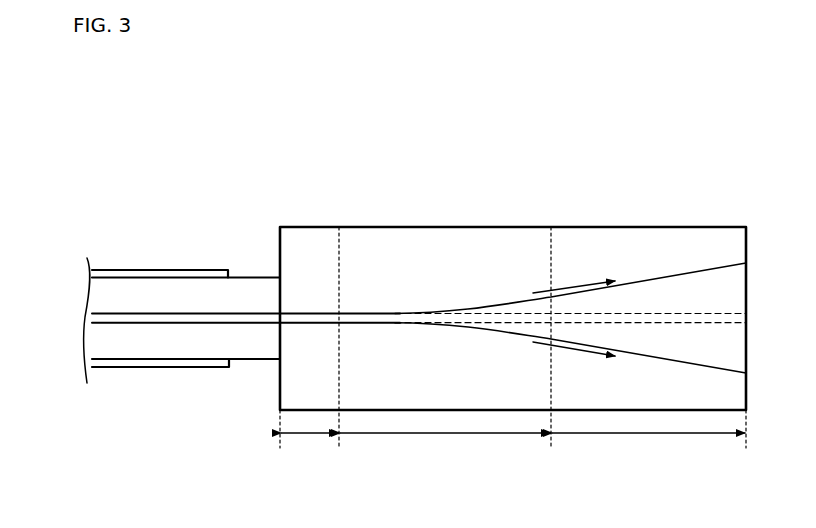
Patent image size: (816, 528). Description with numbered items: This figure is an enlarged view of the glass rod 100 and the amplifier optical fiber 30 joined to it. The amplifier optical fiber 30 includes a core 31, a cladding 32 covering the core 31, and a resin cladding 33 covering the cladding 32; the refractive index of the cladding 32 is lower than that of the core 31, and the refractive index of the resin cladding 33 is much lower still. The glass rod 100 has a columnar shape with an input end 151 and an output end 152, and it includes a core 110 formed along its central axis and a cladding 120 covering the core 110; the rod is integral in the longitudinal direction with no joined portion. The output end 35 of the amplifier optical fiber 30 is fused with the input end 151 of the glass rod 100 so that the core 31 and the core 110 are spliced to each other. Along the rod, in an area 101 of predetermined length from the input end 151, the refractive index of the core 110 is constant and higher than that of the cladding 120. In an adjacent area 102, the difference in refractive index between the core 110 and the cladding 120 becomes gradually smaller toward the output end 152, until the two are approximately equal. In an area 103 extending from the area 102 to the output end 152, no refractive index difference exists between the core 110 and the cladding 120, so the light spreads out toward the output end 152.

The glass rod 100 is at (510, 282).
The core 110 is at (437, 312).
The cladding 120 is at (572, 253).
The amplifier optical fiber 30 is at (242, 318).
The core 31 is at (172, 320).
The cladding 32 is at (130, 342).
The resin cladding 33 is at (98, 363).
The output end 35 is at (280, 293).
The area 101 is at (309, 343).
The area 102 is at (445, 343).
The area 103 is at (649, 435).
The input end 151 is at (278, 383).
The output end 152 is at (746, 383).